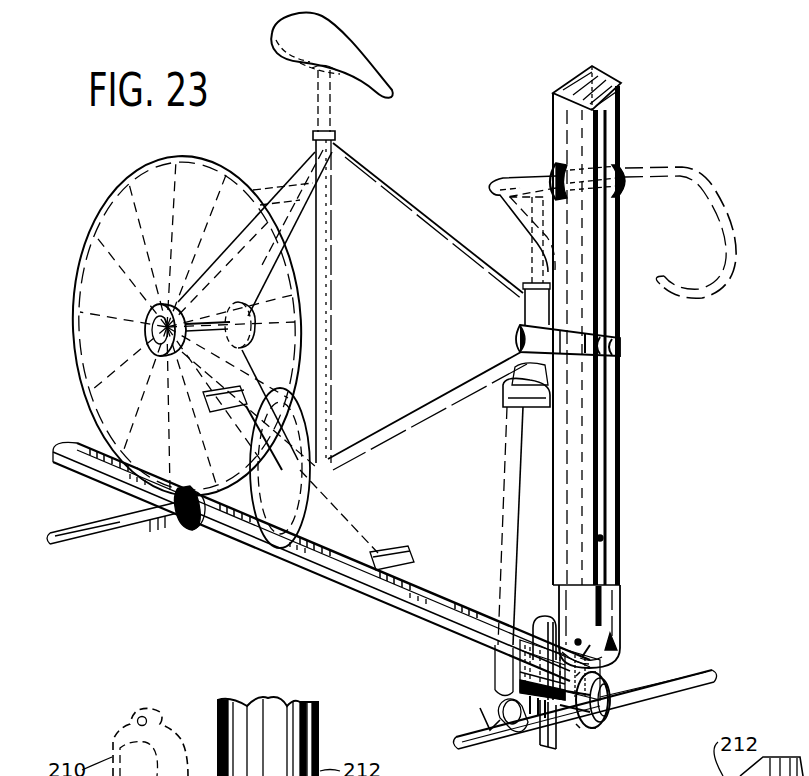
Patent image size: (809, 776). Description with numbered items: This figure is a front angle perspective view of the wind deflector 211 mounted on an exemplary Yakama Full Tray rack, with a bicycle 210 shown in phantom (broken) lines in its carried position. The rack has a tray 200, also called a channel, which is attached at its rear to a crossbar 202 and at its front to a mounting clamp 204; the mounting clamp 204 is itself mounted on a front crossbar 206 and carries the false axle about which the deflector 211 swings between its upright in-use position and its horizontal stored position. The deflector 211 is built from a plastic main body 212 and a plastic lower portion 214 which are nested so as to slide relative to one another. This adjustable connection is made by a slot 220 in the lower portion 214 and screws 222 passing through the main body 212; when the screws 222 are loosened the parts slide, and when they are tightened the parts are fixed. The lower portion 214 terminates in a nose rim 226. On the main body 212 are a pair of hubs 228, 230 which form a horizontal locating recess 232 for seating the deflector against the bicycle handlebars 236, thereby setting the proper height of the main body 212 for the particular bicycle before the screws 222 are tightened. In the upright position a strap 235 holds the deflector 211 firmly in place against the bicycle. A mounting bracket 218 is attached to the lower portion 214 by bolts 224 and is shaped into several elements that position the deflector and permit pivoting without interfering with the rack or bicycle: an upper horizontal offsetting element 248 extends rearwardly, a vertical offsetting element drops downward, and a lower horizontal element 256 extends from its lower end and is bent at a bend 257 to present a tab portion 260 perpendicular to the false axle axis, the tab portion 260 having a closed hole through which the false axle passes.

The tray 200 is at (328, 580).
The crossbar 202 is at (67, 548).
The mounting clamp 204 is at (563, 737).
The front crossbar 206 is at (470, 730).
The bicycle 210 is at (380, 177).
The deflector 211 is at (630, 454).
The main body 212 is at (622, 490).
The lower portion 214 is at (620, 592).
The mounting bracket 218 is at (531, 610).
The slot 220 is at (600, 608).
The screw 222 is at (603, 537).
The bolt 224 is at (612, 637).
The nose rim 226 is at (607, 667).
The hub 228 is at (567, 163).
The hub 230 is at (622, 163).
The locating recess 232 is at (553, 177).
The strap 235 is at (627, 333).
The bicycle handlebars 236 is at (677, 190).
The upper horizontal offsetting element 248 is at (507, 657).
The lower horizontal element 256 is at (553, 733).
The bend 257 is at (520, 687).
The tab portion 260 is at (513, 747).